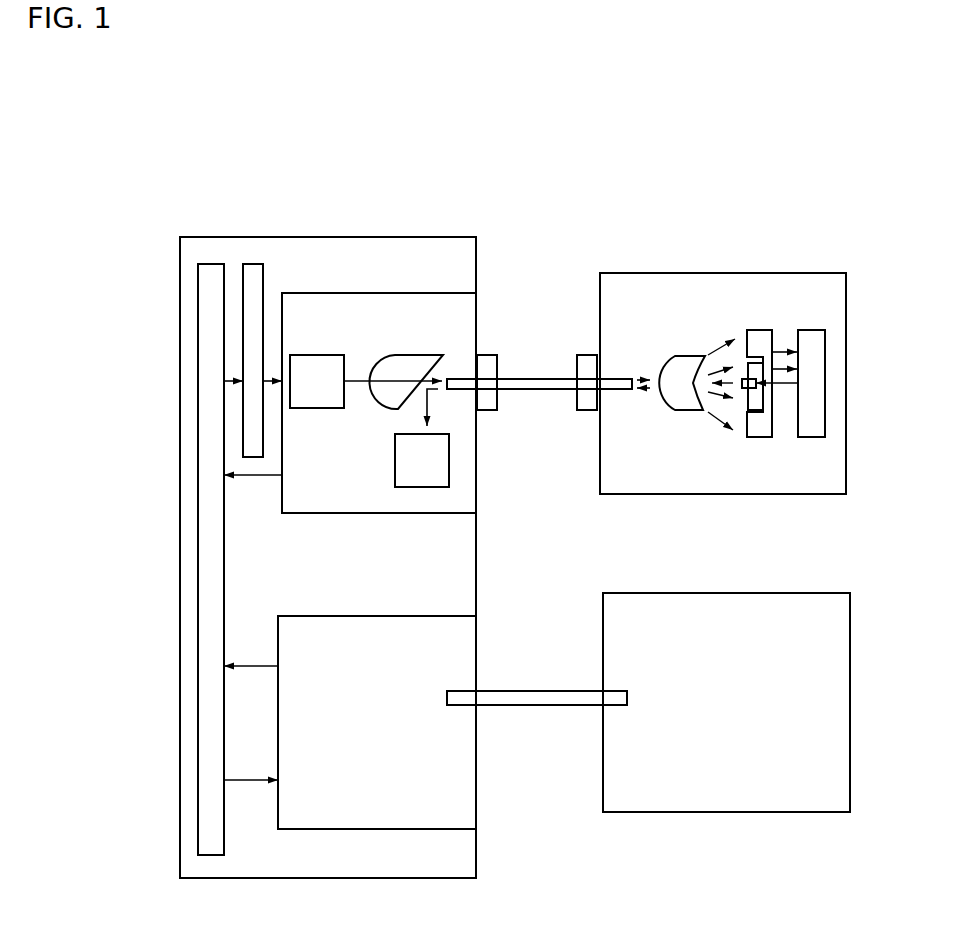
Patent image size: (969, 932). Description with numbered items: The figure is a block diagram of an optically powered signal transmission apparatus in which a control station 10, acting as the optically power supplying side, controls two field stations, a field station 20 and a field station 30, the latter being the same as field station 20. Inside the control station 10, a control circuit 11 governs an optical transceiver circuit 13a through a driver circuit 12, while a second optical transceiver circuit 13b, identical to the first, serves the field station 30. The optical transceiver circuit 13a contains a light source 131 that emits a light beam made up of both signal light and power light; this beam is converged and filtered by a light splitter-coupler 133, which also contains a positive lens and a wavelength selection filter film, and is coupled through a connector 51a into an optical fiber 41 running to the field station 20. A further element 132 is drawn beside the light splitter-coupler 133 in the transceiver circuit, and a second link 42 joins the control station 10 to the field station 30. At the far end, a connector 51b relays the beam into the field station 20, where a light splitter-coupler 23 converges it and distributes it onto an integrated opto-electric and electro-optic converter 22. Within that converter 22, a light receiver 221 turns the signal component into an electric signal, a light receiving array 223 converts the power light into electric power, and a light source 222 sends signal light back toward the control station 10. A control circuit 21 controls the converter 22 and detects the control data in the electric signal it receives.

The control station 10 is at (348, 166).
The control circuit 11 is at (212, 277).
The driver circuit 12 is at (254, 277).
The optical transceiver circuit 13a is at (307, 303).
The optical transceiver circuit 13b is at (313, 651).
The light source 131 is at (323, 367).
The light receiving element 132 is at (430, 467).
The light splitter-coupler 133 is at (397, 362).
The optical fiber 41 is at (526, 389).
The cable 42 is at (544, 705).
The connector 51a is at (492, 357).
The connector 51b is at (578, 357).
The field station 20 is at (627, 501).
The control circuit 21 is at (813, 337).
The integrated opto-electric and electro-optic converter 22 is at (757, 449).
The light receiver 221 is at (750, 372).
The light source 222 is at (752, 388).
The light receiving array 223 is at (760, 333).
The light splitter-coupler 23 is at (677, 368).
The field station 30 is at (643, 821).